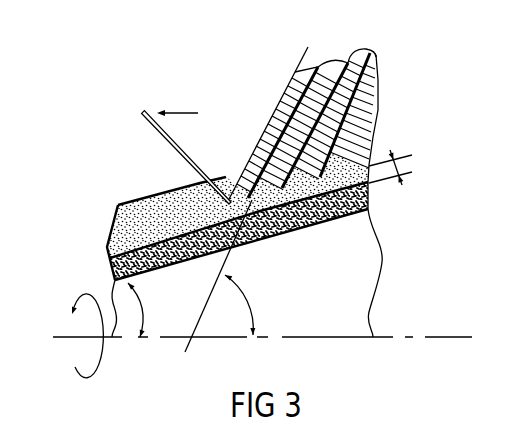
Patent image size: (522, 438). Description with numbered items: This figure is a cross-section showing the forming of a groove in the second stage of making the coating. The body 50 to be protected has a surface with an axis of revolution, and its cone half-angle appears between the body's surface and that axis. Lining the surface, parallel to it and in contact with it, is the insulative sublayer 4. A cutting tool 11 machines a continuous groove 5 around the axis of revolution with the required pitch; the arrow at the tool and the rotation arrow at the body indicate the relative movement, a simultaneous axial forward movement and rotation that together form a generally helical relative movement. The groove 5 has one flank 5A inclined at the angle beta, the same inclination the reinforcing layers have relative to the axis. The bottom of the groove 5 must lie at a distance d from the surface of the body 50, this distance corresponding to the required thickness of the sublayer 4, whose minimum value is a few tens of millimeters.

The insulative sublayer 4 is at (114, 231).
The groove 5 is at (217, 167).
The flank 5A is at (252, 163).
The cutting tool 11 is at (157, 131).
The body 50 is at (372, 202).
The distance d is at (395, 166).